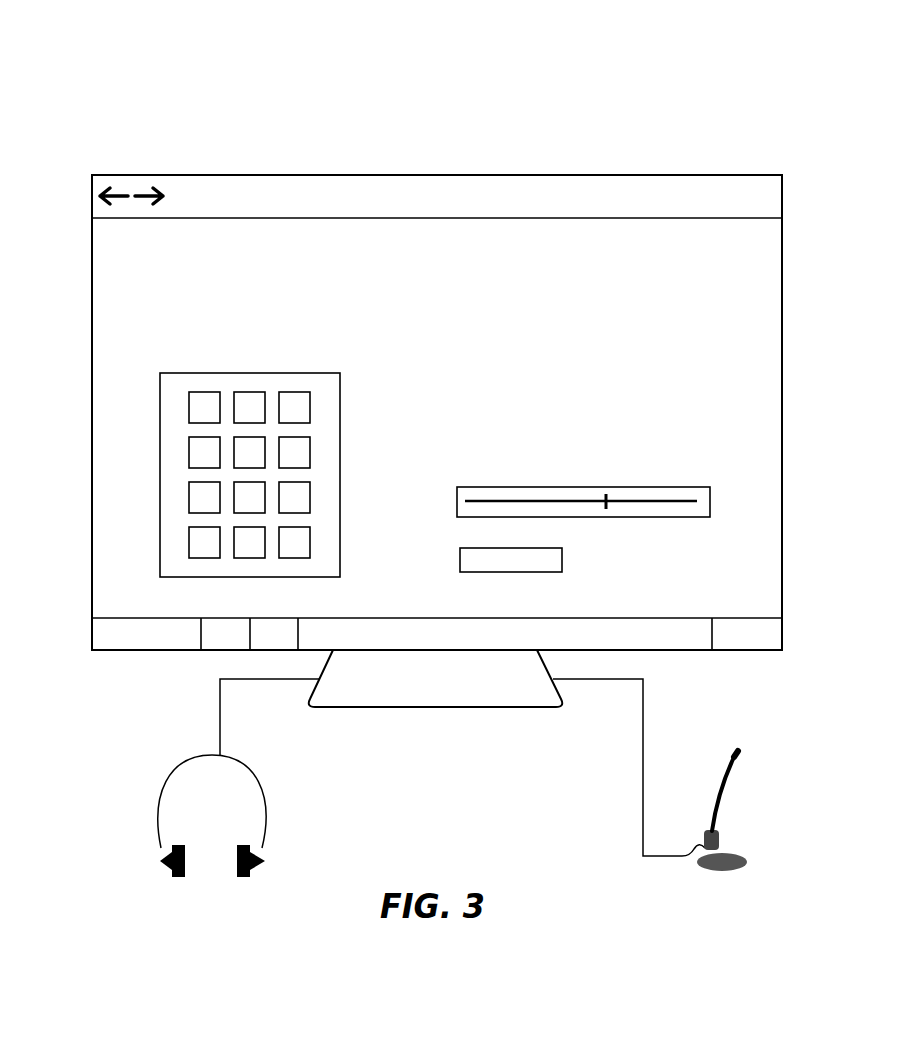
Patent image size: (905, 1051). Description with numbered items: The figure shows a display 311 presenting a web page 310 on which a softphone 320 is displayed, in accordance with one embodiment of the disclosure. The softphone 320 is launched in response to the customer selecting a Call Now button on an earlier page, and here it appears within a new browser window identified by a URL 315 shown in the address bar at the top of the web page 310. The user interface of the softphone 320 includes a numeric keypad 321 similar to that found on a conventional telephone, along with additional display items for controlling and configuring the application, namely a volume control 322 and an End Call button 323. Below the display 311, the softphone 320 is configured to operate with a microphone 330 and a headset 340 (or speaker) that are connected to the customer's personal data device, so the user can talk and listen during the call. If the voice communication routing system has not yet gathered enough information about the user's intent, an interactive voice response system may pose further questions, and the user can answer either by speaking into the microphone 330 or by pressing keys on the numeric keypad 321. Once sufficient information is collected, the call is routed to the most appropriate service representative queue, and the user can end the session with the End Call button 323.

The information handling system display screen 311 is at (263, 78).
The web page 310 is at (100, 277).
The URL 315 is at (724, 190).
The softphone 320 is at (527, 383).
The numeric keypad 321 is at (340, 400).
The volume control 322 is at (711, 498).
The End Call button 323 is at (562, 556).
The microphone 330 is at (722, 800).
The headset 340 is at (263, 812).